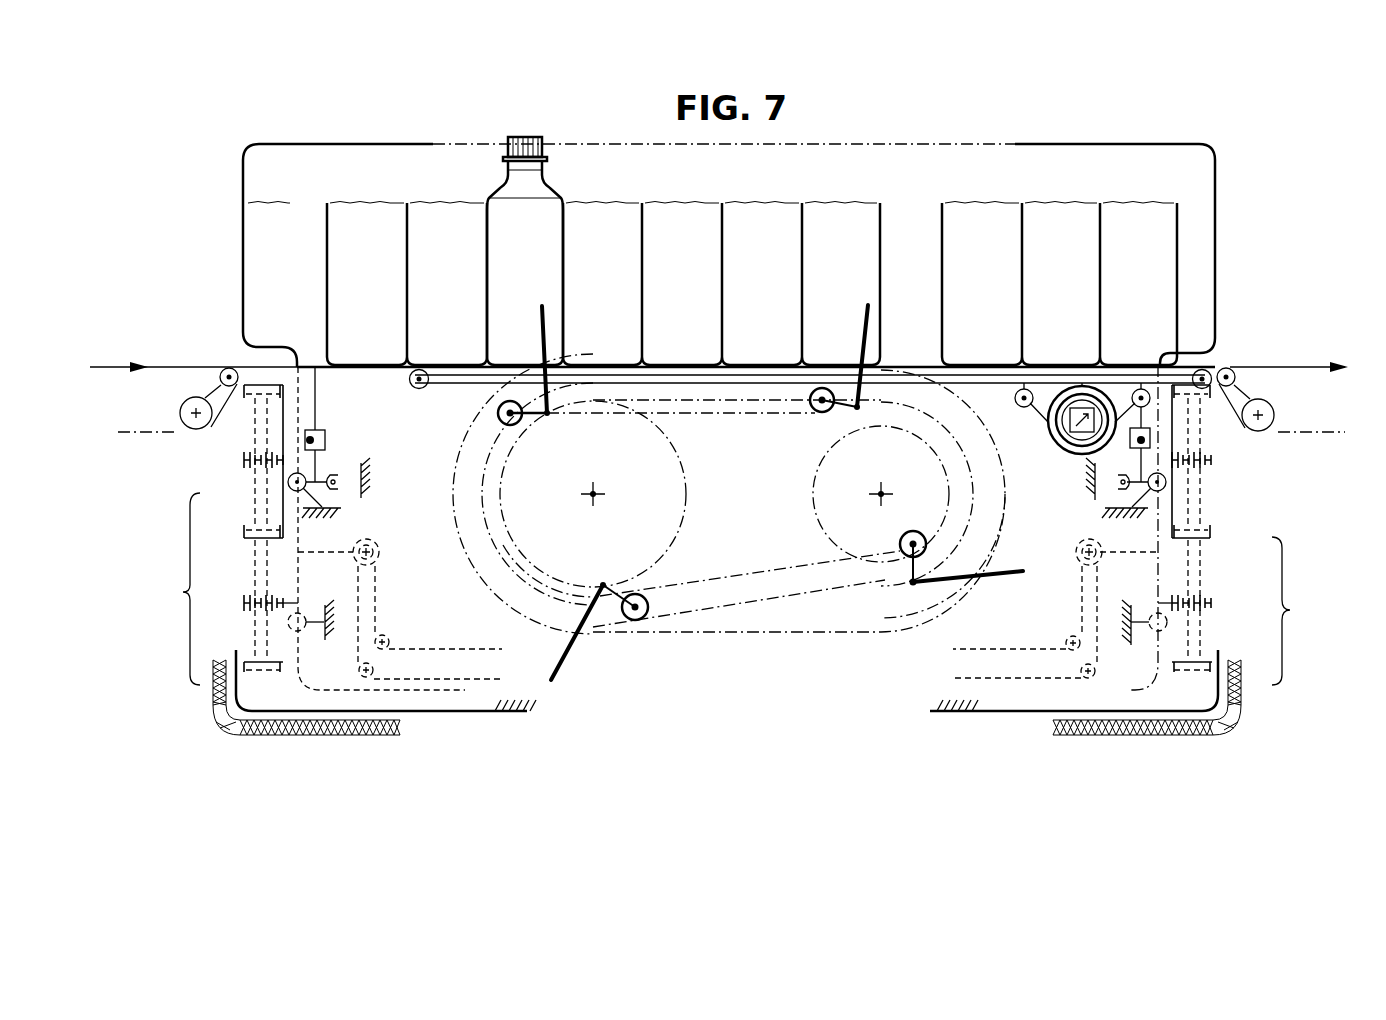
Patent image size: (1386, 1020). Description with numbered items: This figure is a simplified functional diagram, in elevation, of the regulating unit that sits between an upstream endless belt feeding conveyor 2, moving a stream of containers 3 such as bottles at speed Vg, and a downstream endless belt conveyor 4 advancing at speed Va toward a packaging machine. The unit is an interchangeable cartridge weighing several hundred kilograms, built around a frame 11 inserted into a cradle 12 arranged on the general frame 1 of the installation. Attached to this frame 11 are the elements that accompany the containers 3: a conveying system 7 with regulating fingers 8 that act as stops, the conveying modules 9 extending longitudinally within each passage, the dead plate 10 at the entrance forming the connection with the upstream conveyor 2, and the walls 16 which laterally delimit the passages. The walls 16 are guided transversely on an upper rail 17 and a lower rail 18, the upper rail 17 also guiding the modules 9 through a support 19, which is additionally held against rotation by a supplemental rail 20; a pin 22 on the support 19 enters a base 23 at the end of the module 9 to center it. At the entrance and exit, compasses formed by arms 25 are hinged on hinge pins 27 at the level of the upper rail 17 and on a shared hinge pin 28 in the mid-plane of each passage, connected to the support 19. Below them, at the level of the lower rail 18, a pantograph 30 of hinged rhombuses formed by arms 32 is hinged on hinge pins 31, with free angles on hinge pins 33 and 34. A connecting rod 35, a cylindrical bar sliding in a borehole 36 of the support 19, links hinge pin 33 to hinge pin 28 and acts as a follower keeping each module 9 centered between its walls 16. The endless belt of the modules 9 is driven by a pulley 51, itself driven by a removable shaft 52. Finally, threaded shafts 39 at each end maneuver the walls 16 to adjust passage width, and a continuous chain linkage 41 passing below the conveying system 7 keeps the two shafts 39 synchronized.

The general frame 1 is at (380, 724).
The upstream feeding conveyor 2 is at (168, 352).
The containers 3 is at (519, 136).
The downstream conveyor 4 is at (1262, 357).
The conveying system 7 is at (746, 508).
The regulating fingers 8 is at (550, 322).
The conveying modules 9 is at (1218, 354).
The dead plate 10 is at (248, 364).
The frame 11 is at (361, 498).
The cradle 12 is at (1075, 705).
The walls 16 is at (1141, 162).
The upper rail 17 is at (290, 488).
The lower rail 18 is at (299, 618).
The support 19 is at (315, 465).
The supplemental rail 20 is at (343, 482).
The pin 22 is at (325, 438).
The base 23 is at (318, 430).
The arms 25 is at (267, 407).
The hinge pin 27 is at (244, 462).
The hinge pin 28 is at (243, 395).
The pantograph 30 is at (735, 535).
The hinge pins 31 is at (1212, 603).
The arms of the pantograph 32 is at (267, 545).
The hinge pin 33 is at (1210, 540).
The hinge pin 34 is at (281, 672).
The connecting rod 35 is at (280, 527).
The borehole 36 is at (288, 482).
The shaft 39 is at (375, 560).
The continuous chain linkage 41 is at (992, 648).
The pulley 51 is at (1060, 428).
The shaft 52 is at (1075, 432).